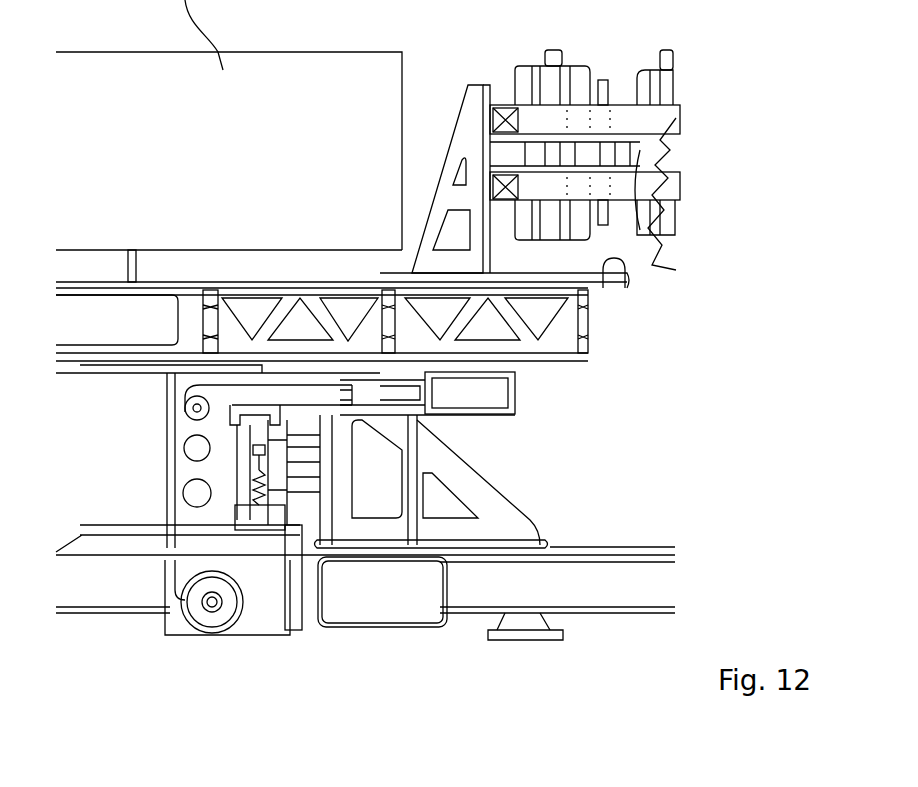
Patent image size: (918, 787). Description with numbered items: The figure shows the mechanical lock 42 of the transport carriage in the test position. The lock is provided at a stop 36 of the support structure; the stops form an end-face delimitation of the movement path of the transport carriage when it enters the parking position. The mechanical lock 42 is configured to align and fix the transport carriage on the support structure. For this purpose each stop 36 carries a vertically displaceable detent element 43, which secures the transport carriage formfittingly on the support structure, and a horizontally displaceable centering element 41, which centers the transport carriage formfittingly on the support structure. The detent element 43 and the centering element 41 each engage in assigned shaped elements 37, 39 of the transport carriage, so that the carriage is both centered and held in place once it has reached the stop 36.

The shaped element 37 is at (185, 385).
The centering element 41 is at (208, 398).
The stop 36 is at (242, 467).
The detent element 43 is at (262, 460).
The mechanical lock 42 is at (280, 460).
The shaped element 39 is at (278, 420).